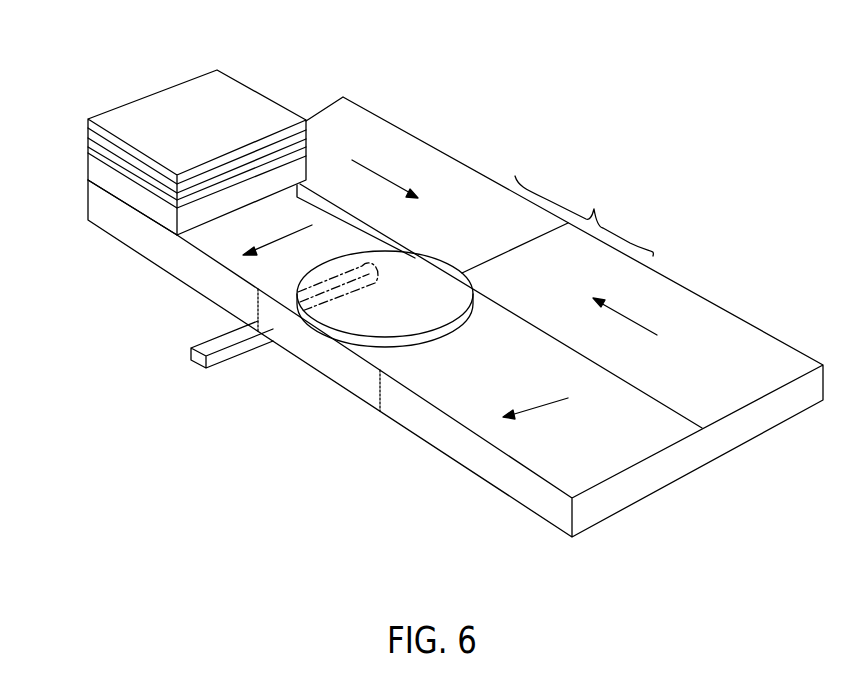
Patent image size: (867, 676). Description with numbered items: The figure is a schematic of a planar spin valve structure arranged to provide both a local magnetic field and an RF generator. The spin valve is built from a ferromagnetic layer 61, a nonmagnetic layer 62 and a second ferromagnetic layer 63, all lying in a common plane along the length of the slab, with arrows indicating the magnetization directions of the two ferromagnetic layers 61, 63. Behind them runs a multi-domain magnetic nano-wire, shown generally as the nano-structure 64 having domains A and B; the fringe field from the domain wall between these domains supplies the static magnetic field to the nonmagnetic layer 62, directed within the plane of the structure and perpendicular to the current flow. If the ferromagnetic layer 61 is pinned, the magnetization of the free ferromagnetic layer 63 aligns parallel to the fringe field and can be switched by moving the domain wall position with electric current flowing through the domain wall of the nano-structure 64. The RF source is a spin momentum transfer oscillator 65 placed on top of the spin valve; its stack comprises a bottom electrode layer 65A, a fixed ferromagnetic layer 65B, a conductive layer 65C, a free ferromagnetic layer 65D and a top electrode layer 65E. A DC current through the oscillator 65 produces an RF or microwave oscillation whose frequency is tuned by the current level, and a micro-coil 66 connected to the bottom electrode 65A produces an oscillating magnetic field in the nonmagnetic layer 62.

The ferromagnetic layer 61 is at (192, 273).
The nonmagnetic layer 62 is at (322, 360).
The ferromagnetic layer 63 is at (540, 455).
The nano-structure 64 is at (584, 216).
The spin momentum transfer (SMT) oscillator 65 is at (163, 144).
The bottom electrode layer 65A is at (133, 210).
The fixed ferromagnetic layer 65B is at (117, 187).
The conductive layer 65C is at (105, 158).
The free ferromagnetic layer 65D is at (108, 137).
The top electrode layer 65E is at (105, 135).
The micro-coil 66 is at (445, 312).